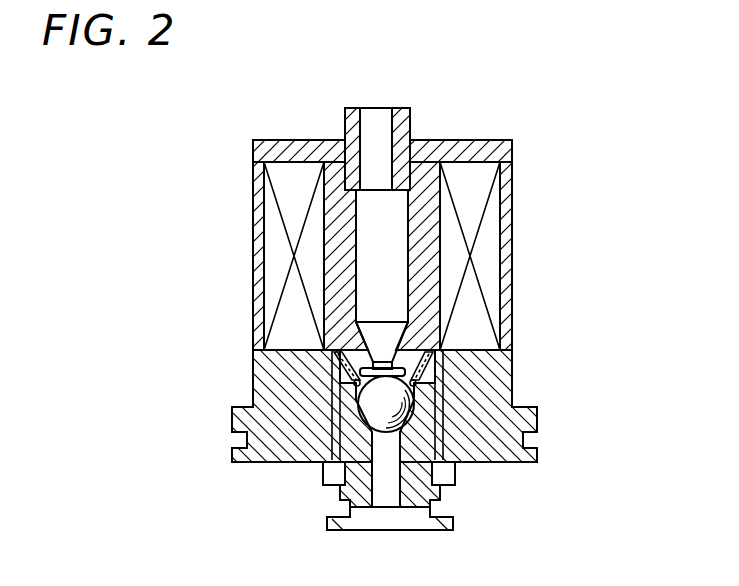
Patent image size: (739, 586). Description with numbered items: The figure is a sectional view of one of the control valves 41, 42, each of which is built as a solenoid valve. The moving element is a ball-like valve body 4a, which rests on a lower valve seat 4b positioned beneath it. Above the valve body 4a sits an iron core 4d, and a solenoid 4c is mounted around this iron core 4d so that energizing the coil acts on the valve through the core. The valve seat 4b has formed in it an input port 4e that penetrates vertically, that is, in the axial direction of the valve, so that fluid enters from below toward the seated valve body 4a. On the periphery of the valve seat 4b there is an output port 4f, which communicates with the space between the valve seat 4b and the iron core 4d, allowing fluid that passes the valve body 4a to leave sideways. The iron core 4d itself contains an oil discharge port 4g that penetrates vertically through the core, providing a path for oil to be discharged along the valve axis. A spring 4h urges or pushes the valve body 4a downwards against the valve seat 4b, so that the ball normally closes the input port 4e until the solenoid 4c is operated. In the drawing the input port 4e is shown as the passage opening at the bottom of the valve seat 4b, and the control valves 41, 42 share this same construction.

The control valve 41 is at (283, 129).
The control valve 42 is at (384, 406).
The valve body 4a is at (397, 397).
The valve seat 4b is at (388, 497).
The solenoid 4c is at (490, 288).
The iron core 4d is at (430, 232).
The input port 4e is at (362, 507).
The output port 4f is at (345, 480).
The oil discharge port 4g is at (380, 123).
The spring 4h is at (335, 381).